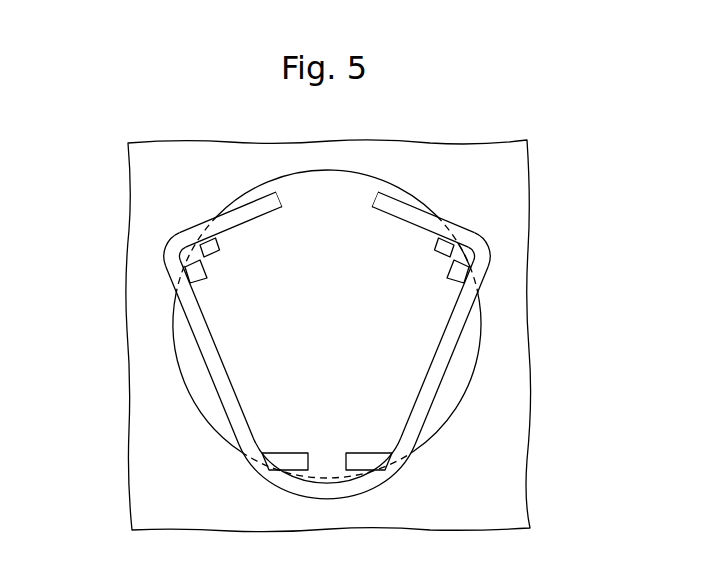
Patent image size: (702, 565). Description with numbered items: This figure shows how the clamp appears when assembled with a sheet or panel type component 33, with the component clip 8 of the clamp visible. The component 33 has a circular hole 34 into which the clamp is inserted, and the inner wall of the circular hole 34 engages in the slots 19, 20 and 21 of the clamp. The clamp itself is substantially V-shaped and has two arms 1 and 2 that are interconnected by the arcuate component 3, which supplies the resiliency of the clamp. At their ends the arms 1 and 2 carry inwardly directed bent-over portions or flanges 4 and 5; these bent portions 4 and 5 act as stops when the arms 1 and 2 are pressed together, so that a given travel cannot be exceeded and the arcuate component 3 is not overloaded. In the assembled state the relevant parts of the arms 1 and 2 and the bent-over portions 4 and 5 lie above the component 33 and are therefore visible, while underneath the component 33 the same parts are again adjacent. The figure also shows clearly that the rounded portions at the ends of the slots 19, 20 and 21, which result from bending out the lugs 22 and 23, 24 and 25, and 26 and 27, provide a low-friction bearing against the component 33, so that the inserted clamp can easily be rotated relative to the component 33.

The arm 1 is at (207, 360).
The arm 2 is at (443, 368).
The arcuate component 3 is at (337, 500).
The bent-over portion 4 is at (268, 202).
The bent-over portion 5 is at (392, 193).
The component clip 8 is at (330, 332).
The slot 19 is at (185, 253).
The slot 20 is at (325, 457).
The slot 21 is at (473, 251).
The lug 22 is at (220, 247).
The lug 23 is at (207, 278).
The lug 24 is at (303, 452).
The lug 25 is at (352, 453).
The lug 26 is at (447, 278).
The lug 27 is at (434, 247).
The sheet or panel type component 33 is at (522, 467).
The circular hole 34 is at (323, 170).